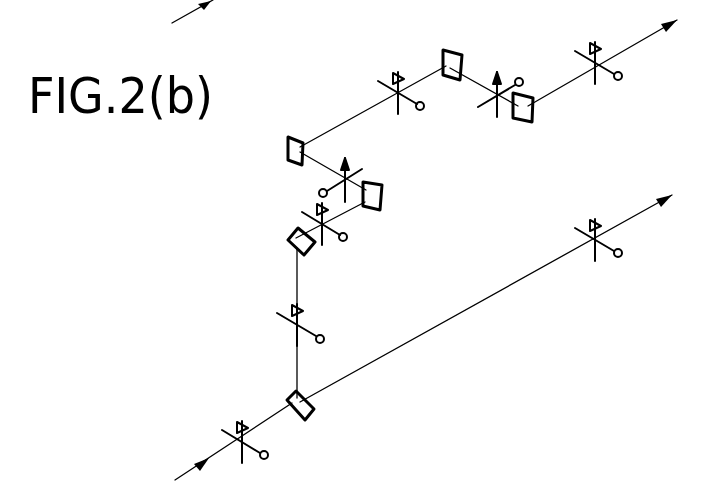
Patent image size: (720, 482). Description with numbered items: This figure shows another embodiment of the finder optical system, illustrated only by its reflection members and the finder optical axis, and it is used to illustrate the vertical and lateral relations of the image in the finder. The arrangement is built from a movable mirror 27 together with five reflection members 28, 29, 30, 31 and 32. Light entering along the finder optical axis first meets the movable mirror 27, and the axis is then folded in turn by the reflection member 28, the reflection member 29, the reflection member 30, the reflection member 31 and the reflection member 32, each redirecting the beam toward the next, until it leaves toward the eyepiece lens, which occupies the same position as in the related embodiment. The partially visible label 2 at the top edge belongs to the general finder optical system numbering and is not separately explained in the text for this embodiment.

The laser beam 2 is at (316, 0).
The movable mirror 27 is at (305, 423).
The reflection member 28 is at (308, 255).
The reflection member 29 is at (378, 212).
The reflection member 30 is at (286, 158).
The reflection member 31 is at (449, 49).
The reflection member 32 is at (527, 124).